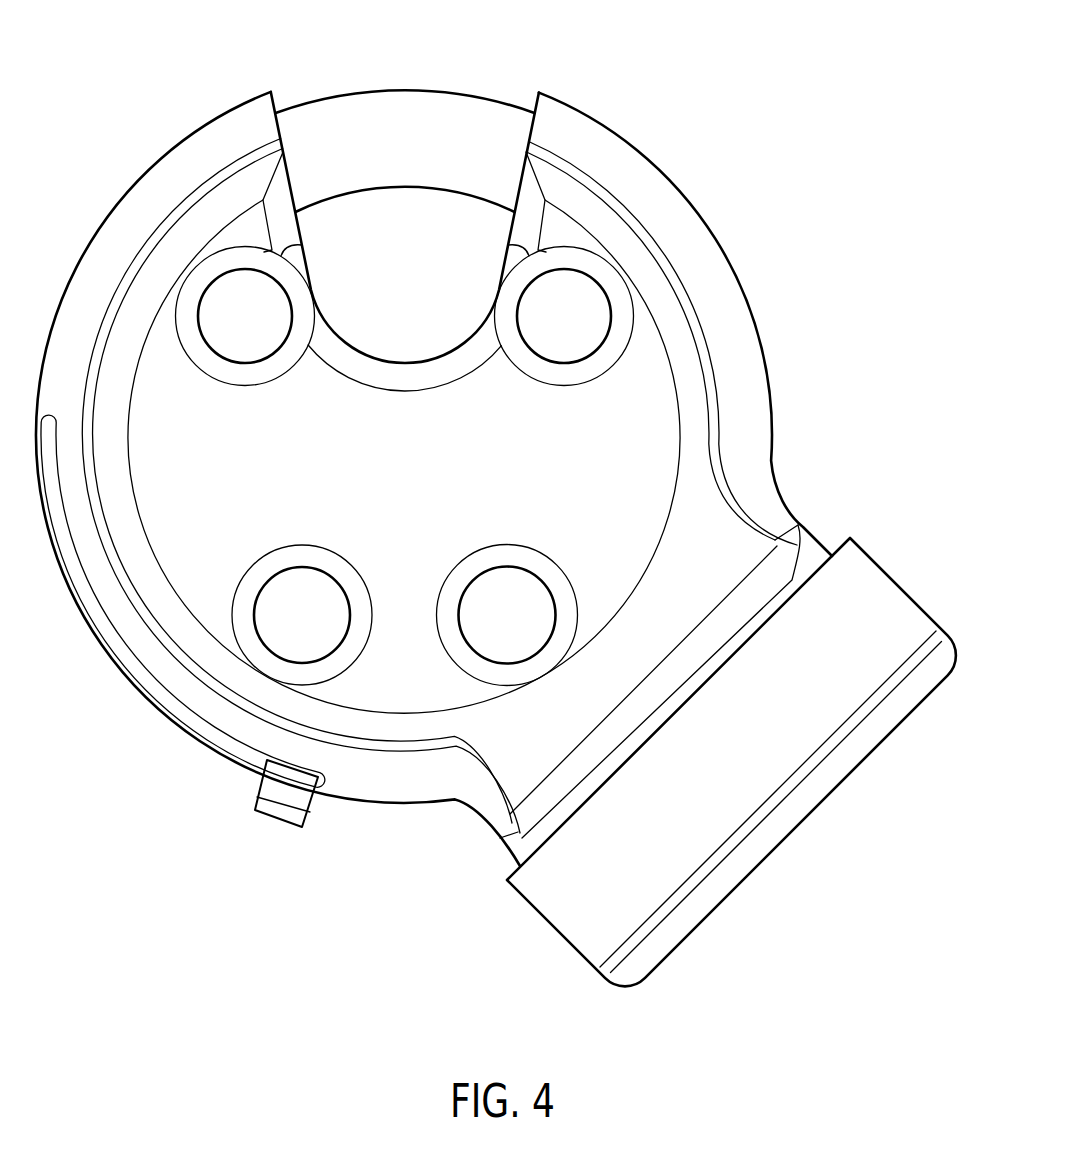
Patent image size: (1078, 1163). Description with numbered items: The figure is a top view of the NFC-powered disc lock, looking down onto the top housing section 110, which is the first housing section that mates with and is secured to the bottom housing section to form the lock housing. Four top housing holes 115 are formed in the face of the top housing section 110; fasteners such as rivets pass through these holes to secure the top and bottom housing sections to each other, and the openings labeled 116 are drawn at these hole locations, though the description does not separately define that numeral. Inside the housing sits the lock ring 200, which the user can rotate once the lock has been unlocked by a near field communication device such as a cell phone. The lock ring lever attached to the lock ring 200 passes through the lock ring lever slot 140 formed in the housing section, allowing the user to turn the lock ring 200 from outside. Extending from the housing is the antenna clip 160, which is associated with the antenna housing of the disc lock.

The lock ring 200 is at (404, 88).
The top housing section 110 is at (638, 150).
The top housing holes 115 is at (281, 553).
The mounting hole 116 is at (245, 323).
The lock ring lever slot 140 is at (105, 621).
The antenna clip 160 is at (877, 566).